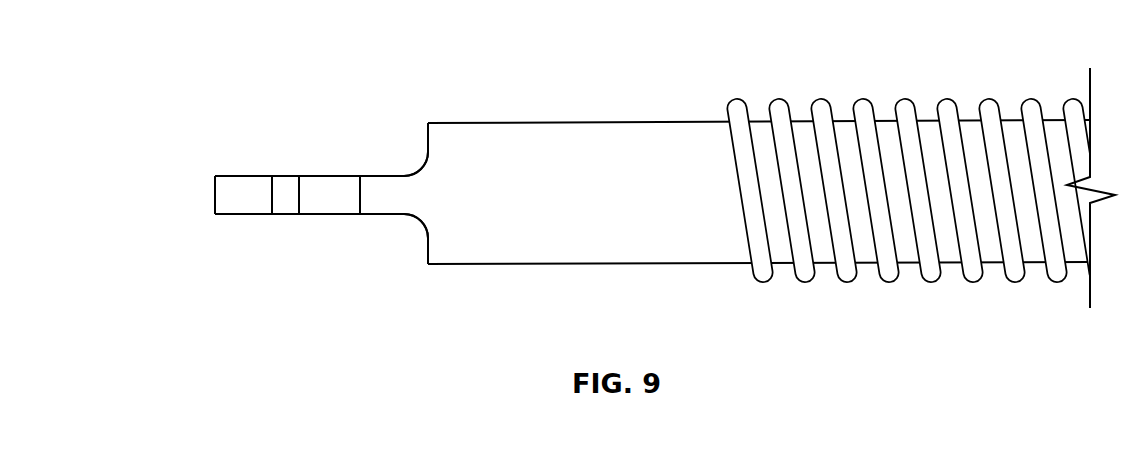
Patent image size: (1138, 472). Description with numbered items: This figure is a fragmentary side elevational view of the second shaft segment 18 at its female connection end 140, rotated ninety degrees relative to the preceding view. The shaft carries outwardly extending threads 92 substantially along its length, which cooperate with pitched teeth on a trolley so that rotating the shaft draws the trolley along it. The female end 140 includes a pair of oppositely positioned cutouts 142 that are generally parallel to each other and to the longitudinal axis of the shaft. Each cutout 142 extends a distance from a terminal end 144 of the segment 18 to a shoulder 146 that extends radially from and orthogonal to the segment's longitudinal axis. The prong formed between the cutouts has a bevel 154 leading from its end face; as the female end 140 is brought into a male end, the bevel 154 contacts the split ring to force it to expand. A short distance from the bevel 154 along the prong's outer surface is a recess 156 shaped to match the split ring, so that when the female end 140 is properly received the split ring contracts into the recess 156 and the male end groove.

The second shaft segment 18 is at (649, 76).
The threads 92 is at (903, 100).
The female connection end 140 is at (270, 261).
The cutouts 142 is at (324, 138).
The terminal end 144 is at (188, 211).
The shoulder 146 is at (428, 140).
The bevel 154 is at (233, 185).
The recess 156 is at (310, 205).